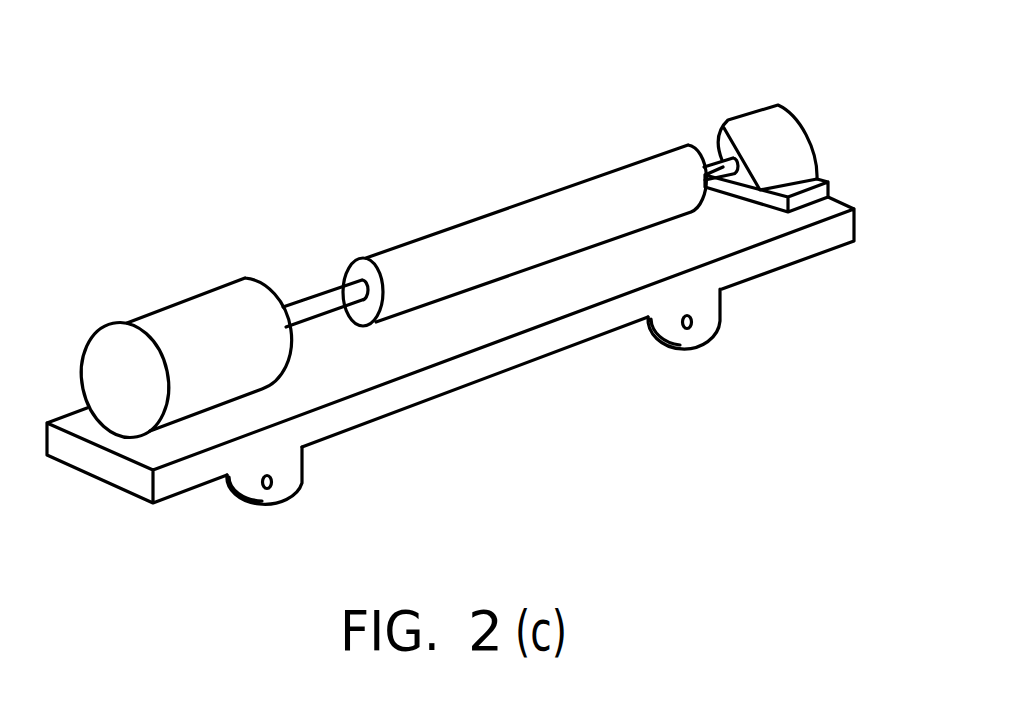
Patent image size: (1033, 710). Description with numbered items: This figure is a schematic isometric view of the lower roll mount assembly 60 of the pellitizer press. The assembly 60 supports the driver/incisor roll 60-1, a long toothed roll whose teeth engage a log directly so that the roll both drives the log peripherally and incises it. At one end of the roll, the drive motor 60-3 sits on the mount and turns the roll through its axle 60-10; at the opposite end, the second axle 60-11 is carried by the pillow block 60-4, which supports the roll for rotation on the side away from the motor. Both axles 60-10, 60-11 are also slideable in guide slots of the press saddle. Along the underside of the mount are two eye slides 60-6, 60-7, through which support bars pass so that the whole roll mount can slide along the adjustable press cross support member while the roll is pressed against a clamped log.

The lower roll mount assembly 60 is at (476, 284).
The driver/incisor roll 60-1 is at (571, 185).
The drive motor 60-3 is at (232, 283).
The pillow block 60-4 is at (797, 120).
The eye slide 60-6 is at (272, 481).
The eye slide 60-7 is at (688, 330).
The axle 60-10 is at (303, 298).
The axle 60-11 is at (717, 150).